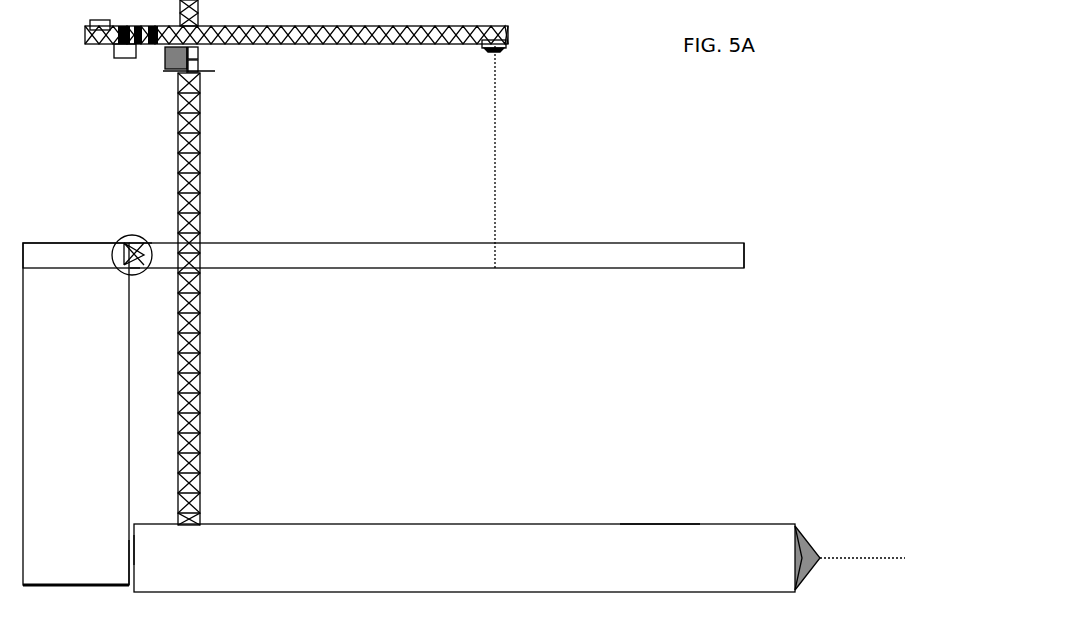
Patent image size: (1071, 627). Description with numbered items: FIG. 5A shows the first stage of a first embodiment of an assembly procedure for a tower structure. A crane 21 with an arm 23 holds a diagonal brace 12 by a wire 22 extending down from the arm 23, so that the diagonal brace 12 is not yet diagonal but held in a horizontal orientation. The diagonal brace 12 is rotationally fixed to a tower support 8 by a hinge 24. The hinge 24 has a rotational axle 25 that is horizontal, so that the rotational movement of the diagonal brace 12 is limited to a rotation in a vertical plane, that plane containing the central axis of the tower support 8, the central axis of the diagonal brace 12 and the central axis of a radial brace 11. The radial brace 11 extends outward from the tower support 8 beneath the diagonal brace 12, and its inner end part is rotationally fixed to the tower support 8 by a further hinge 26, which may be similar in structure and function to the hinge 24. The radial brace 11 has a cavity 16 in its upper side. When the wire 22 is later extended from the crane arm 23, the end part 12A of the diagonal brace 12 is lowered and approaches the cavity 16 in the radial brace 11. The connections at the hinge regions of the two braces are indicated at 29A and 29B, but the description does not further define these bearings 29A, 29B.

The tower support 8 is at (82, 398).
The radial brace 11 is at (770, 525).
The diagonal brace 12 is at (577, 245).
The end part 12A is at (746, 228).
The cavity 16 is at (656, 518).
The crane 21 is at (258, 140).
The wire 22 is at (496, 74).
The arm 23 is at (430, 46).
The hinge 24 is at (130, 226).
The rotational axle 25 is at (138, 268).
The further hinge 26 is at (120, 554).
The lower bearing 29A is at (146, 550).
The upper bearing 29B is at (154, 236).